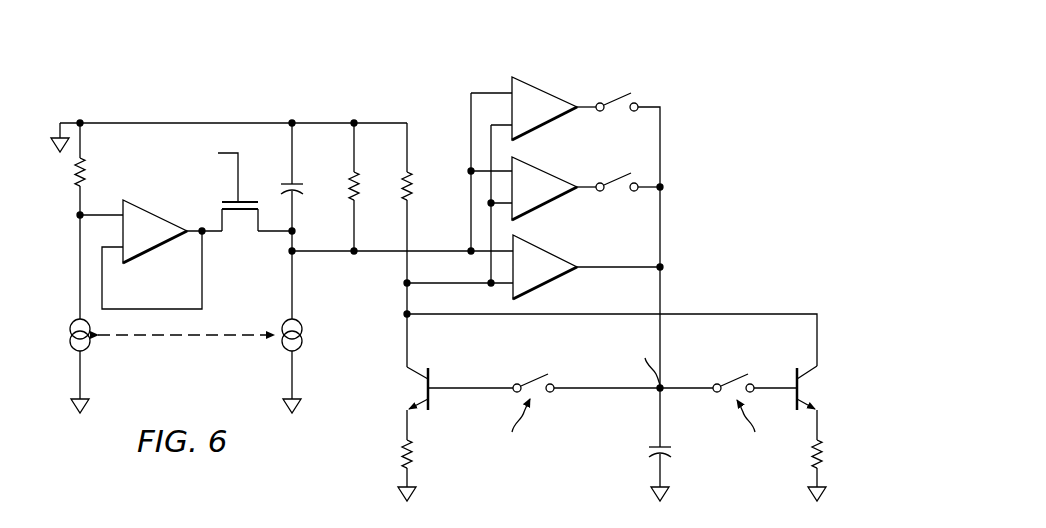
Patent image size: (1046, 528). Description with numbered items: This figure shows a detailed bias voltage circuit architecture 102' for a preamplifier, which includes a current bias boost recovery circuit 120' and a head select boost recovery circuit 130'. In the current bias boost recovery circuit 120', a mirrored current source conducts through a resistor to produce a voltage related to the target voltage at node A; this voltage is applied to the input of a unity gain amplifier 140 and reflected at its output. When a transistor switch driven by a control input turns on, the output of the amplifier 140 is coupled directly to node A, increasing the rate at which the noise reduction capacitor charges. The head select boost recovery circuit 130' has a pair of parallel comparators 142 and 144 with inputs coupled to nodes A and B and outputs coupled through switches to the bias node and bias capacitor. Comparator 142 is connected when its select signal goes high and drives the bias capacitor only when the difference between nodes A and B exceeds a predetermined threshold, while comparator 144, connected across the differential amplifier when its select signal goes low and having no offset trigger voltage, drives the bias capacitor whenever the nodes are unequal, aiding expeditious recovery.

The current bias boost recovery circuit 120' is at (228, 227).
The bias voltage circuit architecture 102' is at (388, 191).
The head select boost recovery circuit 130' is at (624, 269).
The unity gain amplifier 140 is at (156, 246).
The comparator 142 is at (537, 85).
The comparator 144 is at (560, 200).